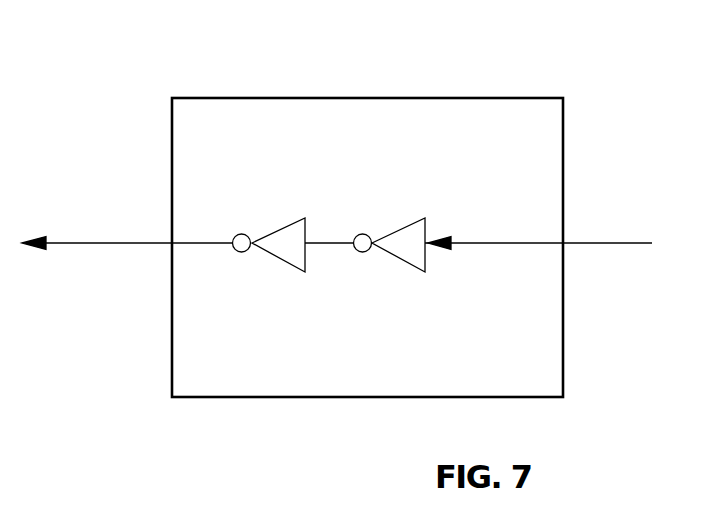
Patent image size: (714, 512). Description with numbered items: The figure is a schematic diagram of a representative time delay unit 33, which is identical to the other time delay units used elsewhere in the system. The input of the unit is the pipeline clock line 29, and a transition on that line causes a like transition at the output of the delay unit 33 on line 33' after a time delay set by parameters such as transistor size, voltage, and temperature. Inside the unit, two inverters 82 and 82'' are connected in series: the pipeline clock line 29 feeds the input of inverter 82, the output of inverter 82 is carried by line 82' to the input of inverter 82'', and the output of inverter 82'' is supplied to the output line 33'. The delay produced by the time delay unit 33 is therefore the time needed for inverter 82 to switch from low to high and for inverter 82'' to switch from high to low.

The time delay unit 33 is at (367, 214).
The output line 33' is at (127, 233).
The pipeline clock line 29 is at (590, 243).
The inverter 82 is at (391, 280).
The line 82' is at (337, 279).
The inverter 82'' is at (280, 280).